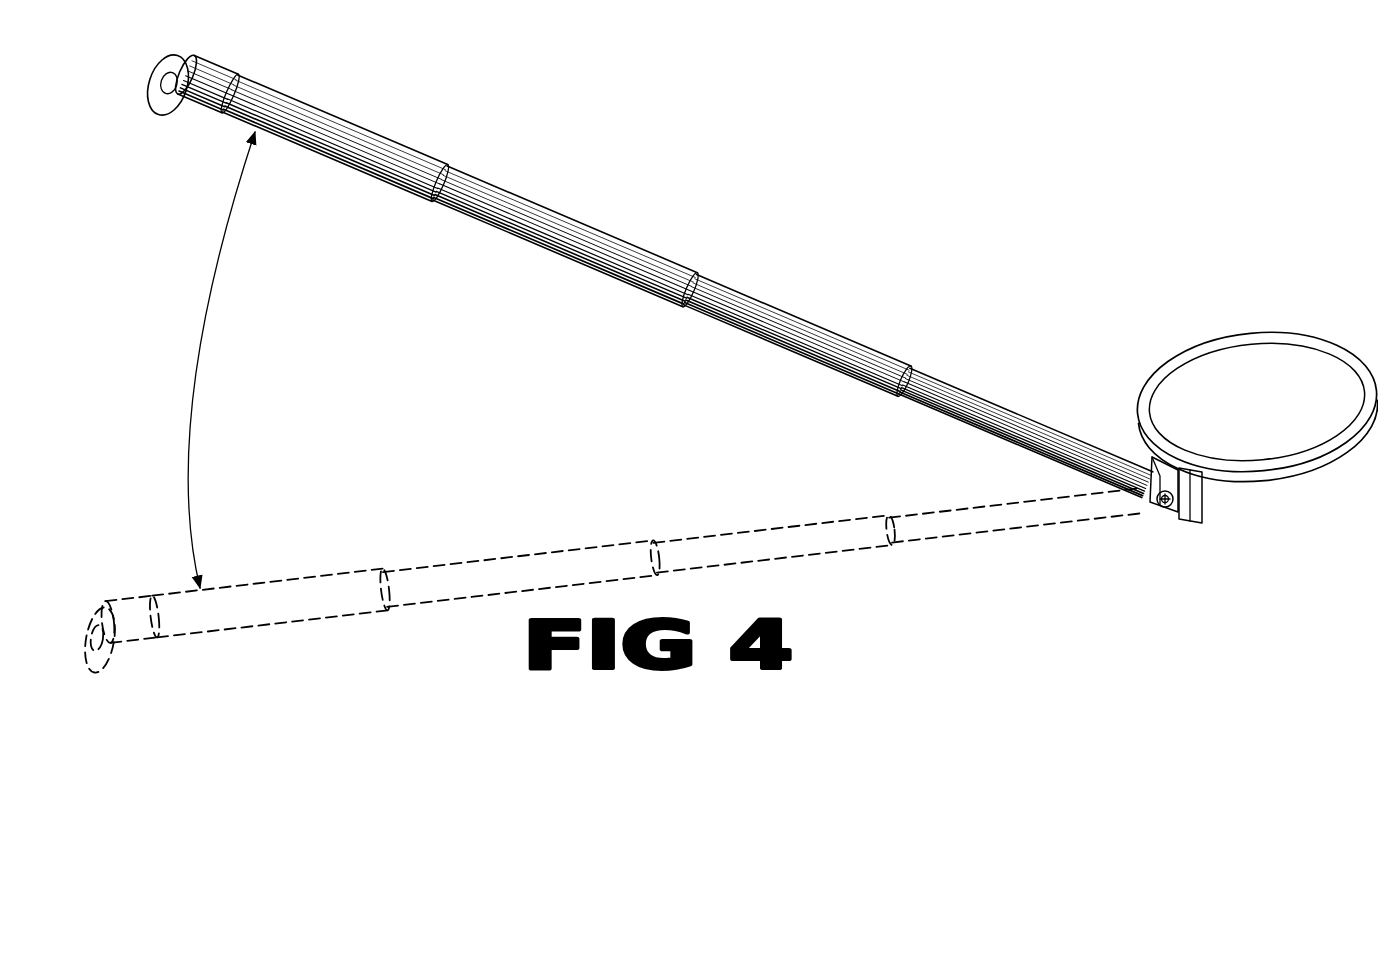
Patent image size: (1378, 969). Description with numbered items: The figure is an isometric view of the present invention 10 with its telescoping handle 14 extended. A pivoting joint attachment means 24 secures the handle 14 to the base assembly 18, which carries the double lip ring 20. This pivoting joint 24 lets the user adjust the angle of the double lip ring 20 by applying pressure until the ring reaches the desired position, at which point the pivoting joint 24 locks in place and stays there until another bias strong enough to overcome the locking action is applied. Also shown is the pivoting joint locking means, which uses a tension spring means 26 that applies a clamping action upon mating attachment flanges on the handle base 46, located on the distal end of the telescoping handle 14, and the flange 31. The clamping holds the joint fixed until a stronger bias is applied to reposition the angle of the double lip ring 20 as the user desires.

The present invention 10 is at (1201, 397).
The handle 14 is at (647, 313).
The base assembly 18 is at (1148, 515).
The double lip ring 20 is at (1198, 345).
The pivoting joint attachment means 24 is at (1151, 468).
The tension spring means 26 is at (1178, 497).
The flange 31 is at (1177, 484).
The handle base 46 is at (1068, 468).